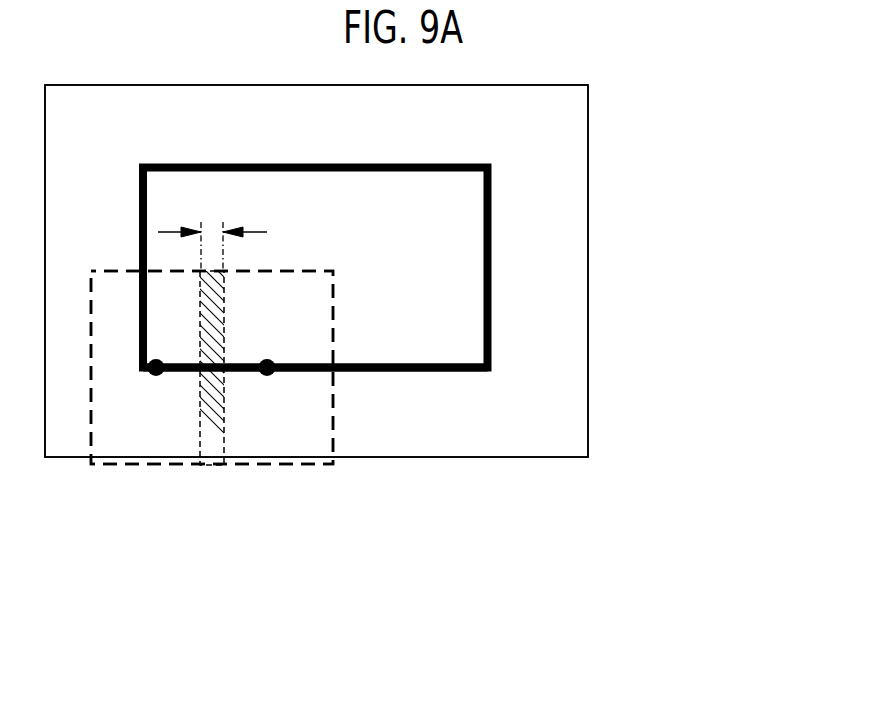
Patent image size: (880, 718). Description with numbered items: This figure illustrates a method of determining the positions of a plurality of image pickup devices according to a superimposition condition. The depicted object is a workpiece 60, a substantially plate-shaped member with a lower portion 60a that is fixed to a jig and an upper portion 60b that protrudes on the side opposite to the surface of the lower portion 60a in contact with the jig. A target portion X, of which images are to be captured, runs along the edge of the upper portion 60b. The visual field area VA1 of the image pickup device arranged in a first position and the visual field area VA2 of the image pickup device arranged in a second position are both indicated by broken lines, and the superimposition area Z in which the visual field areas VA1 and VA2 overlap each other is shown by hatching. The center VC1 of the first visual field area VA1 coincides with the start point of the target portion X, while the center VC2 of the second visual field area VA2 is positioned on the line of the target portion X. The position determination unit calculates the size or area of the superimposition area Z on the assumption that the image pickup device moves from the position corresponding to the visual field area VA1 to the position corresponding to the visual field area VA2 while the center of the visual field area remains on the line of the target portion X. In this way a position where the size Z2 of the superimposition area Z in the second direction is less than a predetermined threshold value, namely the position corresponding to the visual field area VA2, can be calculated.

The workpiece 60 is at (728, 165).
The lower portion 60a is at (573, 265).
The upper portion 60b is at (450, 205).
The superimposition area Z is at (212, 457).
The size of the superimposition area in the second direction Z2 is at (212, 232).
The center of the first visual field area VC1 is at (267, 376).
The center of the second visual field area VC2 is at (157, 376).
The first visual field area VA1 is at (323, 467).
The second visual field area VA2 is at (105, 467).
The target portion X is at (457, 372).